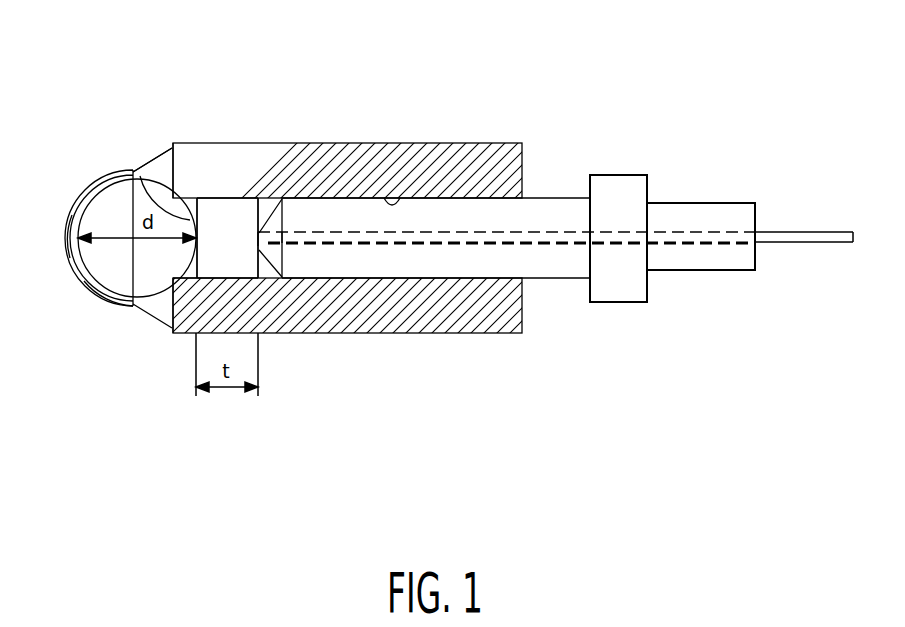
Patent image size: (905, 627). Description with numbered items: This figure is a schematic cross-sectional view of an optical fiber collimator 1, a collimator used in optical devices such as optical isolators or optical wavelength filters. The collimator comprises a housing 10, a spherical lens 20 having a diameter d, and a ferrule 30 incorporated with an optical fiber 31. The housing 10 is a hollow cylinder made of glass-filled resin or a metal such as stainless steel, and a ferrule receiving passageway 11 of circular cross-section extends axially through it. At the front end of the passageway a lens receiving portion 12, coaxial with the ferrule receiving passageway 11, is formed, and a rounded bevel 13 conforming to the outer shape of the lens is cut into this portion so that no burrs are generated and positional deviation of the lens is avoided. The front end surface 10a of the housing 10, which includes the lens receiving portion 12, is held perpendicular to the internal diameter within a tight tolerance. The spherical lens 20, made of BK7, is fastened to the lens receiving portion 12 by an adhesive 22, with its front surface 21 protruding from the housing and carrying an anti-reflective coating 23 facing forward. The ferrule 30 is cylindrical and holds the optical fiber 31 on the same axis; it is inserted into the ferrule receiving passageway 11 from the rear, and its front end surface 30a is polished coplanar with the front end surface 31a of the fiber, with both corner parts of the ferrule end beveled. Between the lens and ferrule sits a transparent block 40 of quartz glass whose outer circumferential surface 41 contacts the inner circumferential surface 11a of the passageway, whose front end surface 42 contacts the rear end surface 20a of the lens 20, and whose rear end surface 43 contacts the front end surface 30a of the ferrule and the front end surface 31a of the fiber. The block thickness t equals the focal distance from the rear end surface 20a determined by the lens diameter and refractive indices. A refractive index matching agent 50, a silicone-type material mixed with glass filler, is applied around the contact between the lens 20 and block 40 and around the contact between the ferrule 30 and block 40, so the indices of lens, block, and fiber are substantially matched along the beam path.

The optical fiber collimator 1 is at (497, 111).
The housing 10 is at (338, 143).
The front end surface of the housing 10a is at (172, 160).
The ferrule receiving passageway 11 is at (523, 282).
The inner circumferential surface of the ferrule receiving passageway 11a is at (392, 198).
The lens receiving portion 12 is at (176, 300).
The rounded bevel 13 is at (172, 305).
The spherical lens 20 is at (72, 215).
The rear end surface of the lens 20a is at (148, 176).
The front surface of the lens 21 is at (84, 281).
The adhesive 22 is at (166, 160).
The anti-reflective coating 23 is at (70, 215).
The ferrule 30 is at (555, 197).
The front end surface of the ferrule 30a is at (281, 246).
The optical fiber 31 is at (420, 243).
The front end surface of the optical fiber 31a is at (283, 206).
The transparent block 40 is at (233, 265).
The outer circumferential surface of the block 41 is at (200, 200).
The front end surface of the block 42 is at (198, 275).
The rear end surface of the block 43 is at (262, 246).
The refractive index matching agent 50 is at (213, 195).